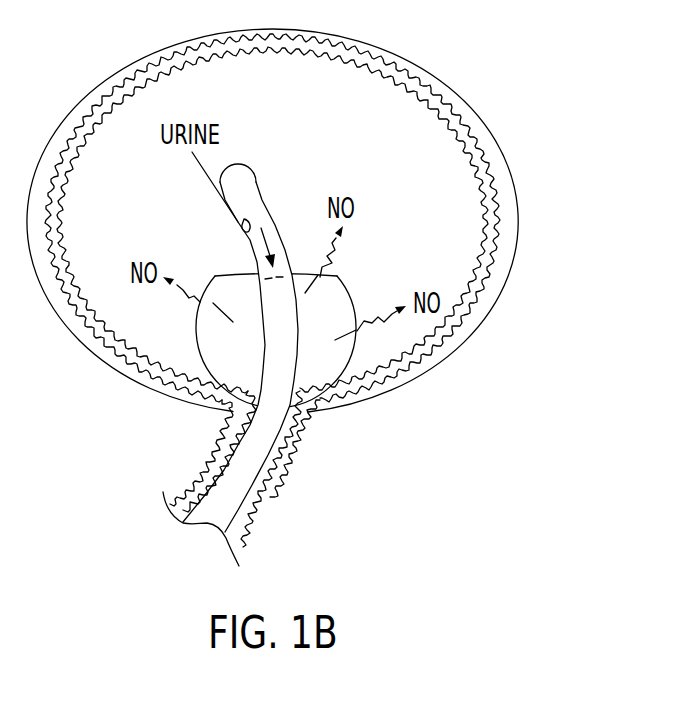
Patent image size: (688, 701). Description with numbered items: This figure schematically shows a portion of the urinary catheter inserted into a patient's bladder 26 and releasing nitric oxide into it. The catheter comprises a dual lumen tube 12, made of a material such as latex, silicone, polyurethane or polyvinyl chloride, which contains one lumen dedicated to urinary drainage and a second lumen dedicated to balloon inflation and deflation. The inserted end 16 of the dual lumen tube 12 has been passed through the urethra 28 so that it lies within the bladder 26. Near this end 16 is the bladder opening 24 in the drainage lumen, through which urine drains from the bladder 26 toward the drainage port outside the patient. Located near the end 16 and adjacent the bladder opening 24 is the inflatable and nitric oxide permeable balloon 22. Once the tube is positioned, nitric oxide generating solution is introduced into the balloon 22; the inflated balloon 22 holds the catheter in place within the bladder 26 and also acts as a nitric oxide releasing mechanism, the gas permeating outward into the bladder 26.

The dual lumen tube 12 is at (257, 447).
The end 16 is at (270, 172).
The inflatable and nitric oxide permeable balloon 22 is at (352, 297).
The bladder opening 24 is at (243, 229).
The bladder 26 is at (517, 203).
The urethra 28 is at (273, 502).